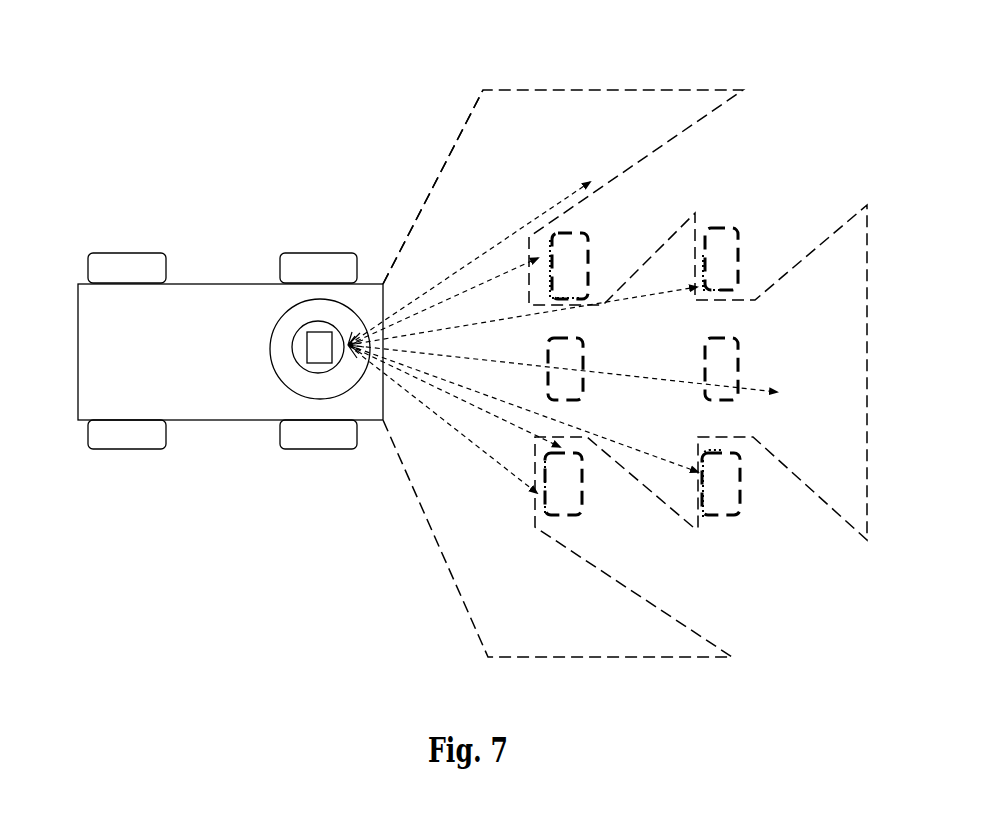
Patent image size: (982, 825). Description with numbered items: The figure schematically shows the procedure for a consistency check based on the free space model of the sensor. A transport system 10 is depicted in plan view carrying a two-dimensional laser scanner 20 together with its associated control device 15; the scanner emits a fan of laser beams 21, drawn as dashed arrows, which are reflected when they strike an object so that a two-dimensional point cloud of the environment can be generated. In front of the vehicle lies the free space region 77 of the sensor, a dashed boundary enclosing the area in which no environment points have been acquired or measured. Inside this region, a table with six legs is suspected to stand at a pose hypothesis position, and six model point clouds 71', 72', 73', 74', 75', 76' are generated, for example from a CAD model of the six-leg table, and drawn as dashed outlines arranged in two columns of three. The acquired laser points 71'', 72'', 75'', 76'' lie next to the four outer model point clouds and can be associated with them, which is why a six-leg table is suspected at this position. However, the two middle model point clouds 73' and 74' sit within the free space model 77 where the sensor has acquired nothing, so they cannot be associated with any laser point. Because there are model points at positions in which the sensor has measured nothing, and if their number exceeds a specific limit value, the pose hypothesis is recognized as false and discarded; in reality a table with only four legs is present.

The transport system 10 is at (118, 226).
The control device 15 is at (297, 373).
The 2D laser scanner 20 is at (313, 343).
The laser beams 21 is at (423, 288).
The free space region 77 is at (573, 82).
The model point cloud 75' is at (601, 251).
The acquired laser points 75'' is at (546, 232).
The model point cloud 76' is at (753, 247).
The acquired laser points 76'' is at (758, 291).
The model point cloud 73' is at (510, 407).
The model point cloud 74' is at (756, 368).
The model point cloud 71' is at (591, 512).
The acquired laser points 71'' is at (507, 497).
The model point cloud 72' is at (748, 519).
The acquired laser points 72'' is at (727, 531).